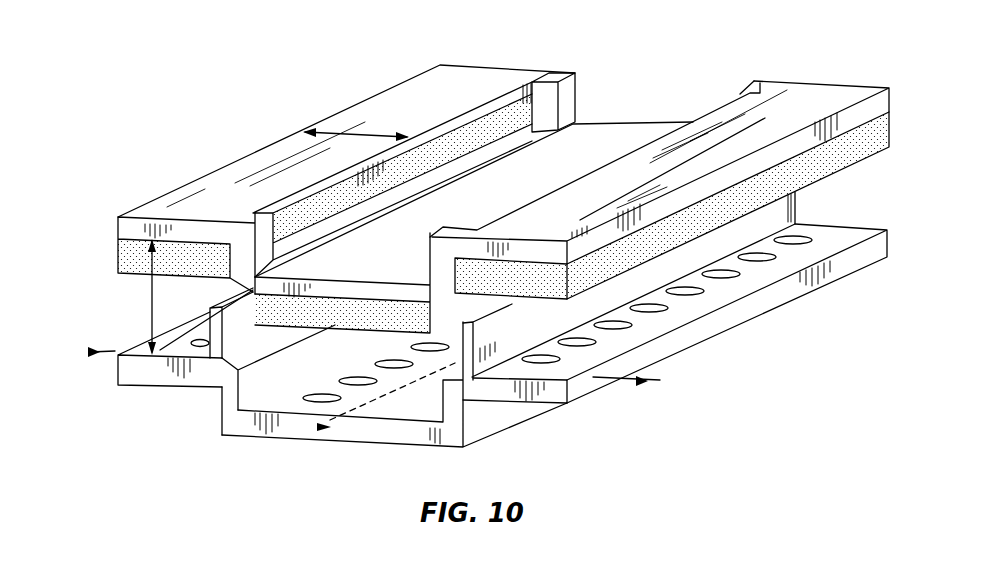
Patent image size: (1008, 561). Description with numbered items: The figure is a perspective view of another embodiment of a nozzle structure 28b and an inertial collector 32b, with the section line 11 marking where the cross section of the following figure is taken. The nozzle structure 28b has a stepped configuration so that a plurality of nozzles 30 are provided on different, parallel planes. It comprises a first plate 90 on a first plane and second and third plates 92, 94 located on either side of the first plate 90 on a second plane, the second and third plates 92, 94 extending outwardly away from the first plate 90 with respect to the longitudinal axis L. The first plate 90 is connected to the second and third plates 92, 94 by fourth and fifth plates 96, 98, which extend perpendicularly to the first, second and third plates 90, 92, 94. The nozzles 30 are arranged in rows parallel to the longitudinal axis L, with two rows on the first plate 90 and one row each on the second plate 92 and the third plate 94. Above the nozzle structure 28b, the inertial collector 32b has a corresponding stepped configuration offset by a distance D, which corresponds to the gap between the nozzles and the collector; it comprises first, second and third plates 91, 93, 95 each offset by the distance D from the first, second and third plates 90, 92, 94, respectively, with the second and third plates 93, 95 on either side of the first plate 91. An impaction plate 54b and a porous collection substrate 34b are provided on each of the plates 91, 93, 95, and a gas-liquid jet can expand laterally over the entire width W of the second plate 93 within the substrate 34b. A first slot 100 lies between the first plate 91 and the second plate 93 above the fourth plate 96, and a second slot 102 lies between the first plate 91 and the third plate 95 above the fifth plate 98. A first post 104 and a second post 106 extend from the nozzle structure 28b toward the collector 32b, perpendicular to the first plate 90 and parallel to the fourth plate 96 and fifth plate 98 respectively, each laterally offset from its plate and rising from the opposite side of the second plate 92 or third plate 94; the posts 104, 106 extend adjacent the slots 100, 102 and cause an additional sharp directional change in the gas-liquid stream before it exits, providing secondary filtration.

The inertial collector 32b is at (775, 76).
The second plate 93 is at (466, 70).
The third plate 95 is at (817, 103).
The first plate 91 is at (621, 143).
The porous collection substrate 34b is at (118, 253).
The impaction plate 54b is at (384, 116).
The first slot 100 is at (538, 132).
The second slot 102 is at (711, 117).
The nozzle structure 28b is at (818, 203).
The nozzles 30 is at (197, 345).
The first plate 90 is at (388, 431).
The second plate 92 is at (130, 378).
The third plate 94 is at (547, 404).
The fourth plate 96 is at (238, 400).
The fifth plate 98 is at (488, 420).
The first post 104 is at (233, 358).
The second post 106 is at (529, 329).
The section line 11 is at (92, 353).
The width W is at (337, 130).
The distance D is at (150, 297).
The longitudinal axis L is at (337, 427).